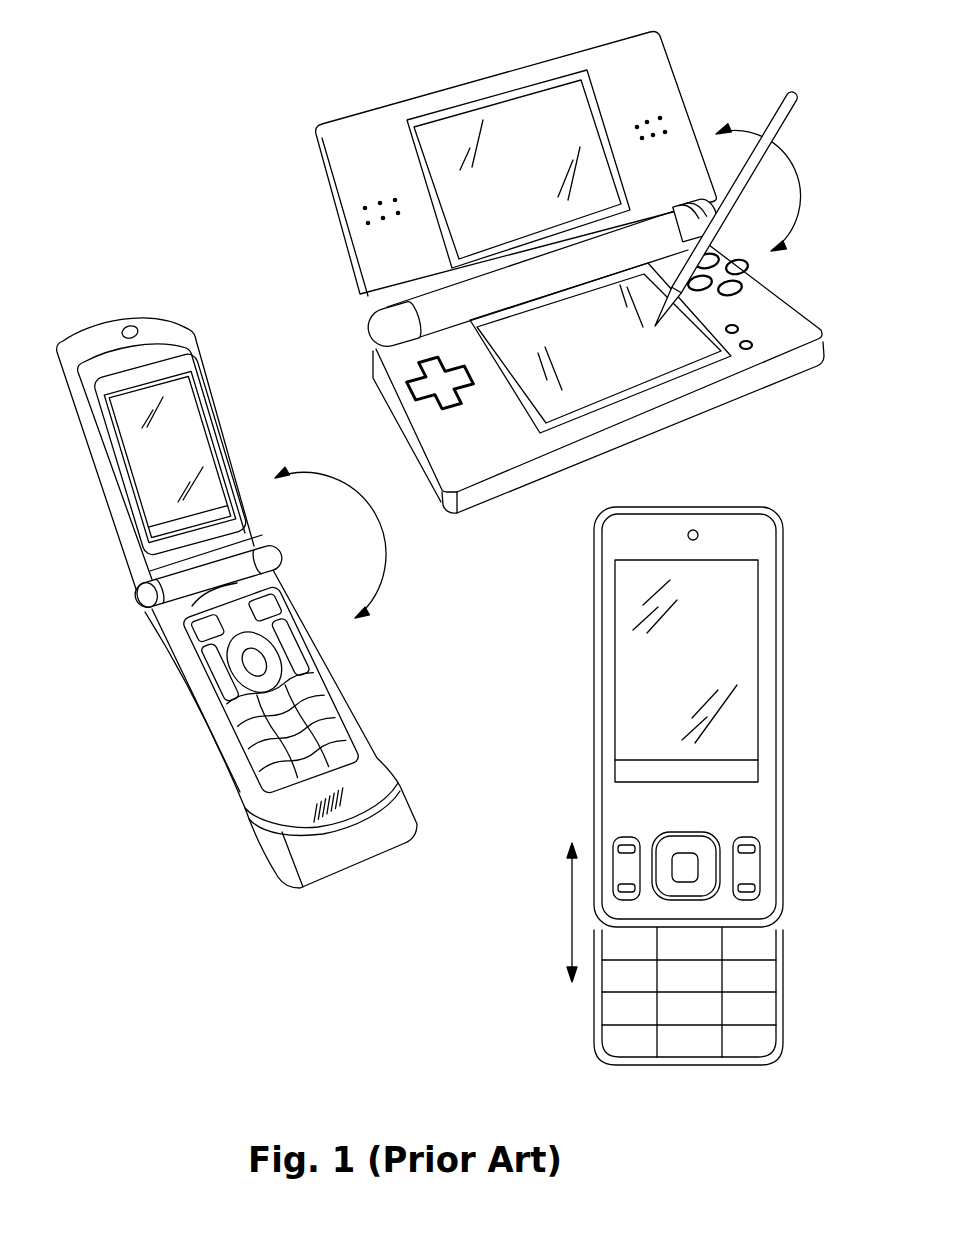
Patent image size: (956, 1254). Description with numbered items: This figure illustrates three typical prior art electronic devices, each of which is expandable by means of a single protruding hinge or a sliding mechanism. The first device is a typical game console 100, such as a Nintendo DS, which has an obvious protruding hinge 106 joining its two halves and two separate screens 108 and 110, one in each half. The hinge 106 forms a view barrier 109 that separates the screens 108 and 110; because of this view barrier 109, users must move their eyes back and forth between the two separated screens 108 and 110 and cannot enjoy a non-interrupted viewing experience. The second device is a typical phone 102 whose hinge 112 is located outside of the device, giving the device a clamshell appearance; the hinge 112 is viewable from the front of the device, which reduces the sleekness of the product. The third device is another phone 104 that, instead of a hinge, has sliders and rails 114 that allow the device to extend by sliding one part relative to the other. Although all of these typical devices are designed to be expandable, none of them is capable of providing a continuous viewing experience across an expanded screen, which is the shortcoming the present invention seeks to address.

The game console 100 is at (94, 45).
The phone 102 is at (380, 858).
The phone 104 is at (594, 690).
The hinge 106 is at (440, 307).
The screen 108 is at (522, 219).
The view barrier 109 is at (549, 241).
The screen 110 is at (630, 370).
The hinge 112 is at (143, 594).
The sliders and rails 114 is at (555, 951).